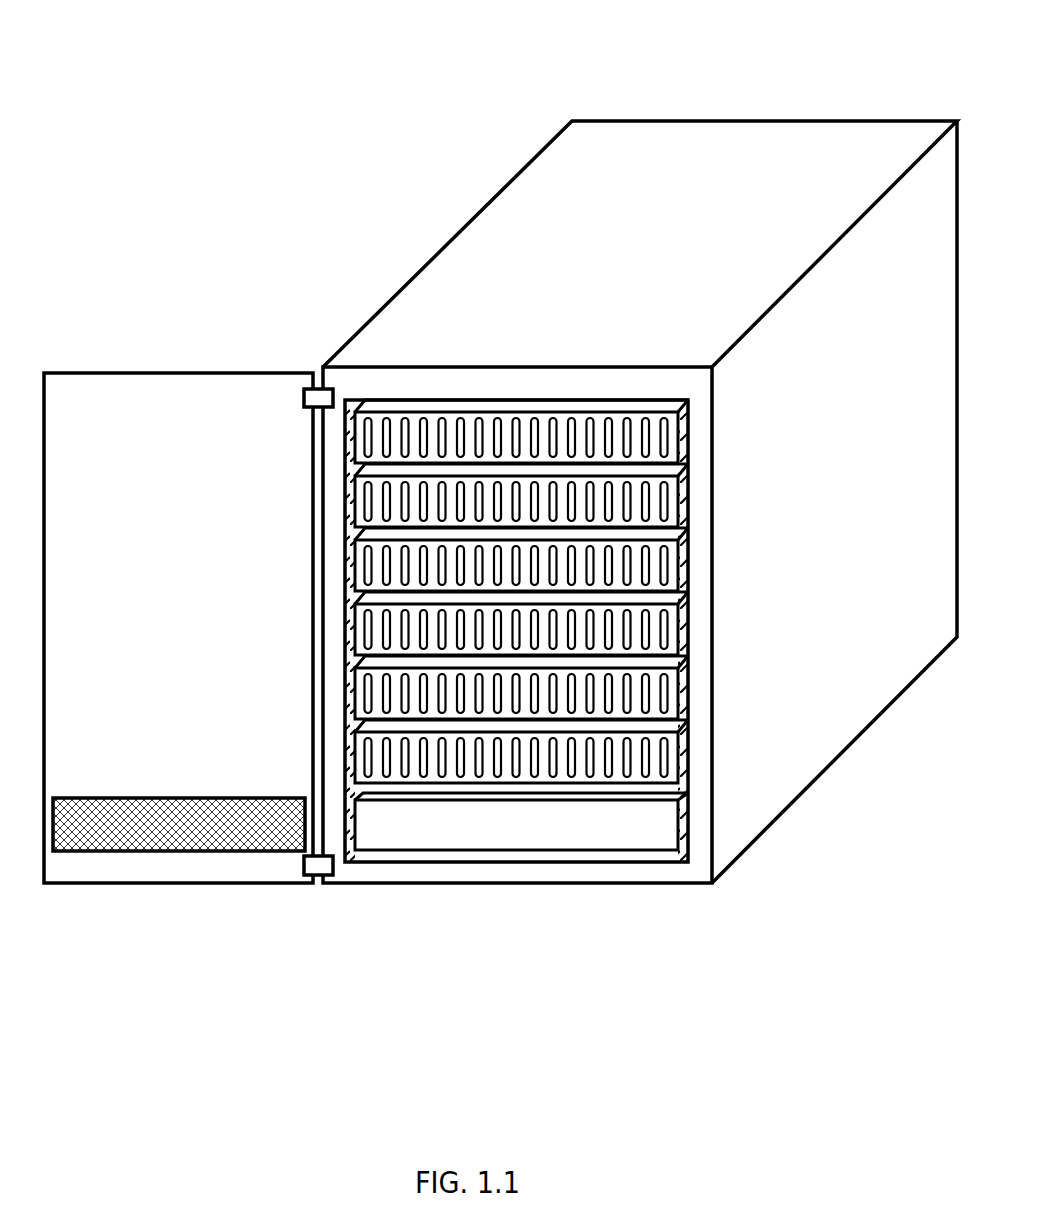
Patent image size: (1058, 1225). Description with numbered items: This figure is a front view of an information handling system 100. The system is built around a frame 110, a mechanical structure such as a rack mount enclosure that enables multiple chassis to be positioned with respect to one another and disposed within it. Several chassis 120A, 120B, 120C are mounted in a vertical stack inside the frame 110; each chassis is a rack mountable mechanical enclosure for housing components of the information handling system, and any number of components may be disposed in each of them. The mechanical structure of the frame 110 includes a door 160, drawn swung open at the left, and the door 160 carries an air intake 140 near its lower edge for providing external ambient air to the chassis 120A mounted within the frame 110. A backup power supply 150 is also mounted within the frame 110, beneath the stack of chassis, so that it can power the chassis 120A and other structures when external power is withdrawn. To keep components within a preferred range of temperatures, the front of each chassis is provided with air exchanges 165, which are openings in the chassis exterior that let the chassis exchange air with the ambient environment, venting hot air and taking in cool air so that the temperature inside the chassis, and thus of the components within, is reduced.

The information handling system 100 is at (456, 99).
The frame 110 is at (472, 920).
The chassis 120A is at (383, 383).
The chassis 120B is at (693, 552).
The chassis 120C is at (694, 731).
The air intake 140 is at (230, 875).
The backup power supply 150 is at (691, 869).
The door 160 is at (121, 912).
The air exchange 165 is at (530, 402).